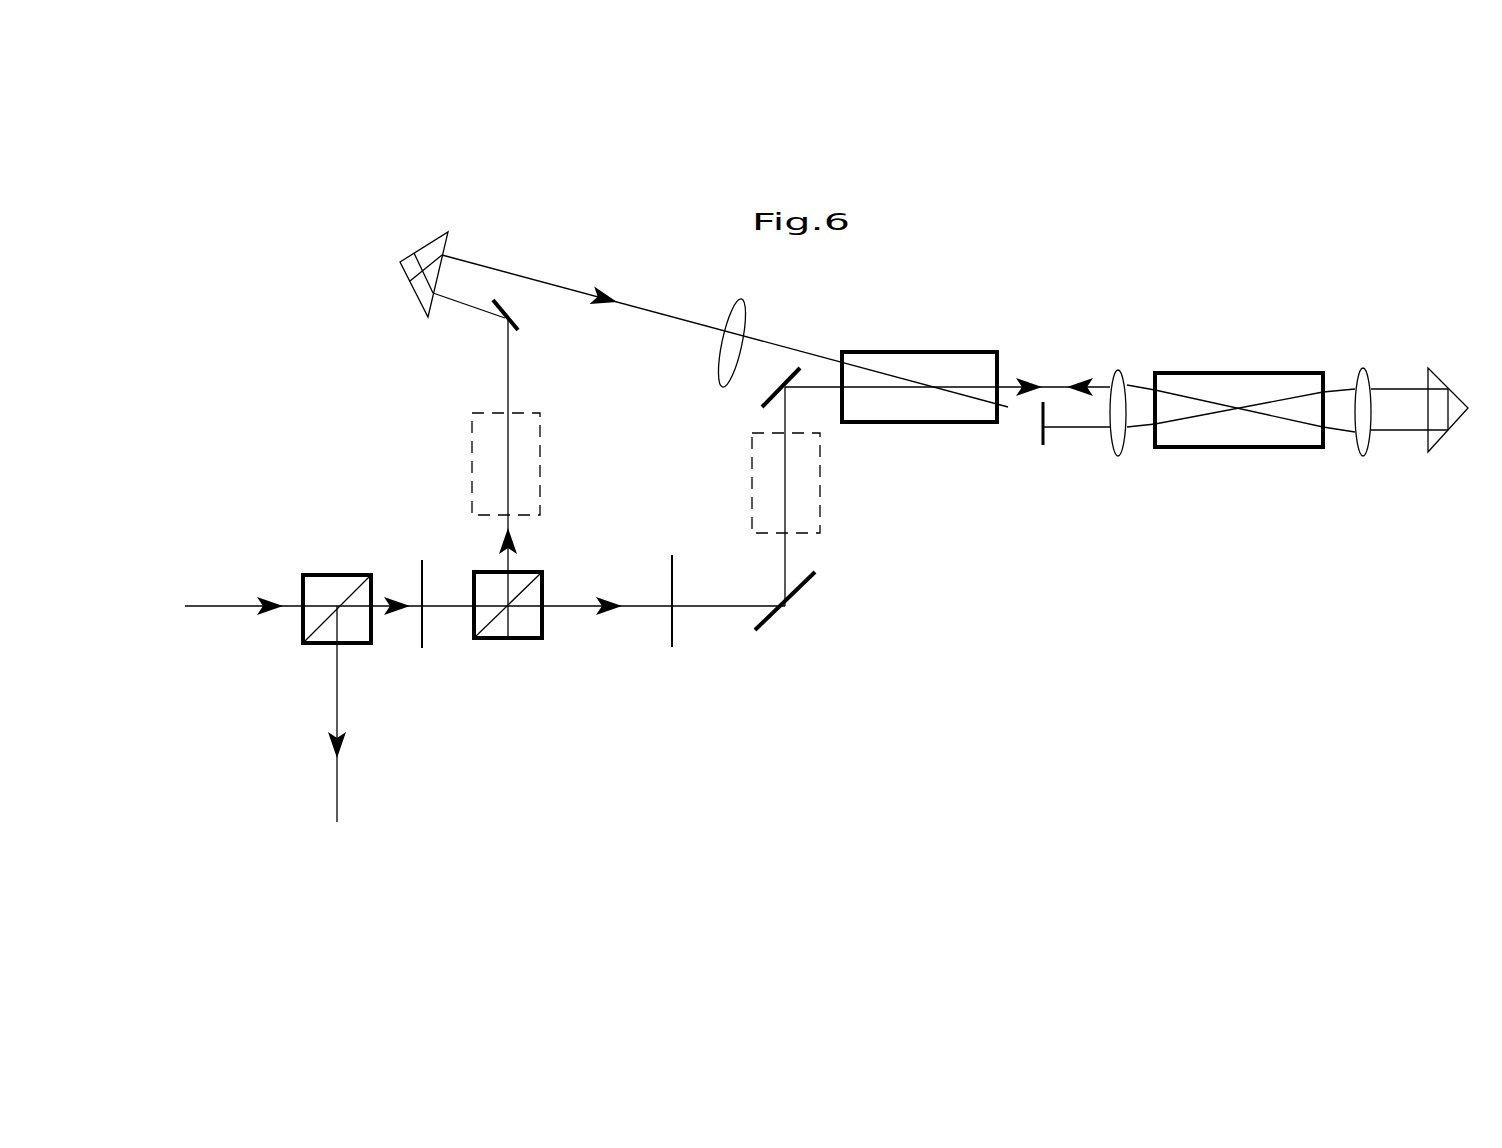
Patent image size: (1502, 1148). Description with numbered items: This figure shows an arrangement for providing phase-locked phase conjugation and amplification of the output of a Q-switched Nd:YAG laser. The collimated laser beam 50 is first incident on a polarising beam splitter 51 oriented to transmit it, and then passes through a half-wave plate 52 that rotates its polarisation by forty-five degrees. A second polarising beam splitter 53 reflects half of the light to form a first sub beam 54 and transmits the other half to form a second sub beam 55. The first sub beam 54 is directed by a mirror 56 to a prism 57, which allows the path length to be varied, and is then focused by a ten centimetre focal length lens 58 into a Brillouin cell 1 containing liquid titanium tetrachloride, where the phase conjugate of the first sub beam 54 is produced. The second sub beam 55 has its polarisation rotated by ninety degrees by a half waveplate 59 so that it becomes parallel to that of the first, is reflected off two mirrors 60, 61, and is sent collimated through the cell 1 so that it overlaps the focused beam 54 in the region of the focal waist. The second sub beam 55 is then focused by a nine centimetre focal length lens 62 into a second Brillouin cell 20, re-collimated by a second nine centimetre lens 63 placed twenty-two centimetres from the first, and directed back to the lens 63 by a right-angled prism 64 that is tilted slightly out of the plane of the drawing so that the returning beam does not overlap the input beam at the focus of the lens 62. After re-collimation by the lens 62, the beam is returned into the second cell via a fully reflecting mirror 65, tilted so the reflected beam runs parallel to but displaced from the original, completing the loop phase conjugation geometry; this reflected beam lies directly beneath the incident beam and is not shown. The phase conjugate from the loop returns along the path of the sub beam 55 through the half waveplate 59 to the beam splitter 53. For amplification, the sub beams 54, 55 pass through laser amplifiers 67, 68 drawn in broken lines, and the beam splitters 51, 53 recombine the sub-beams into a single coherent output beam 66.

The Brillouin cell 1 is at (919, 397).
The SBS cell 20 is at (1241, 424).
The laser beam 50 is at (200, 606).
The polarising beam splitter 51 is at (337, 575).
The half-wave plate 52 is at (420, 582).
The second polarising beam splitter 53 is at (500, 640).
The first sub beam 54 is at (647, 303).
The second sub beam 55 is at (637, 607).
The mirror 56 is at (518, 318).
The prism 57 is at (423, 243).
The lens 58 is at (728, 312).
The half waveplate 59 is at (673, 627).
The mirror 60 is at (797, 588).
The mirror 61 is at (777, 390).
The lens 62 is at (1113, 372).
The second lens 63 is at (1365, 378).
The right-angled prism 64 is at (1448, 389).
The mirror 65 is at (1045, 438).
The single coherent light beam 66 is at (337, 785).
The laser amplifier 67 is at (472, 473).
The laser amplifier 68 is at (750, 485).